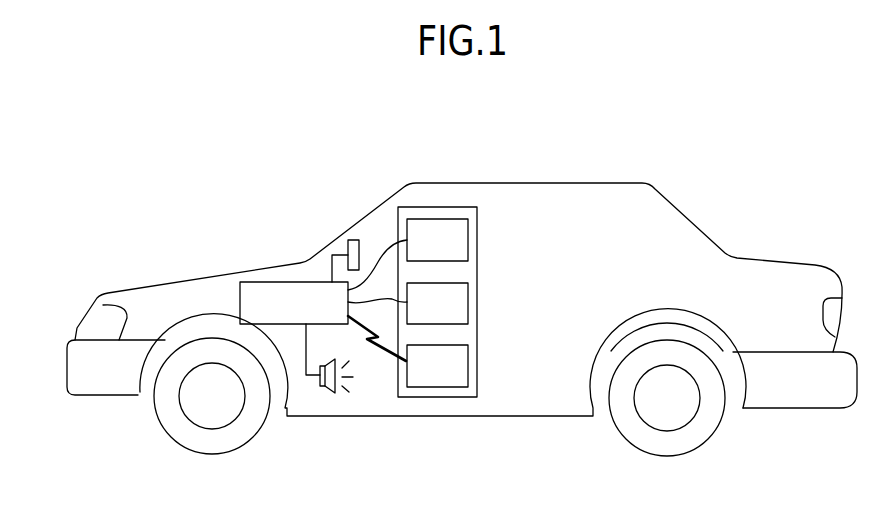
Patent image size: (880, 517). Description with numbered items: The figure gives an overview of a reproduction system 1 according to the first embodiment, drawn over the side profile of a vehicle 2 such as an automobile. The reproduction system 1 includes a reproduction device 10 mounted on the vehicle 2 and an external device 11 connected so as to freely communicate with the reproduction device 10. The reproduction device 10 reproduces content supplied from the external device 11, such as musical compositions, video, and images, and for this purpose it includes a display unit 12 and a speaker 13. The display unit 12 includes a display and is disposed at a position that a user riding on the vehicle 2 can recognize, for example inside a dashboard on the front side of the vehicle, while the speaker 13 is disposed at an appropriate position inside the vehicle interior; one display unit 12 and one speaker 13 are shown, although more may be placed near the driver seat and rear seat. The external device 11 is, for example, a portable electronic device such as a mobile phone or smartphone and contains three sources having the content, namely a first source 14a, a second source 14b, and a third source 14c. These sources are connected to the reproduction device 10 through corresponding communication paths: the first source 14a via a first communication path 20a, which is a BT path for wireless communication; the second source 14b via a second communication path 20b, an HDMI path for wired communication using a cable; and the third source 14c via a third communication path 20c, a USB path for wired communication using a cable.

The reproduction system 1 is at (295, 158).
The vehicle 2 is at (585, 183).
The reproduction device 10 is at (274, 282).
The external device 11 is at (438, 207).
The display unit 12 is at (355, 240).
The speaker 13 is at (325, 392).
The first source 14a is at (468, 367).
The second source 14b is at (468, 303).
The third source 14c is at (468, 240).
The first communication path 20a is at (381, 348).
The second communication path 20b is at (362, 304).
The third communication path 20c is at (391, 252).